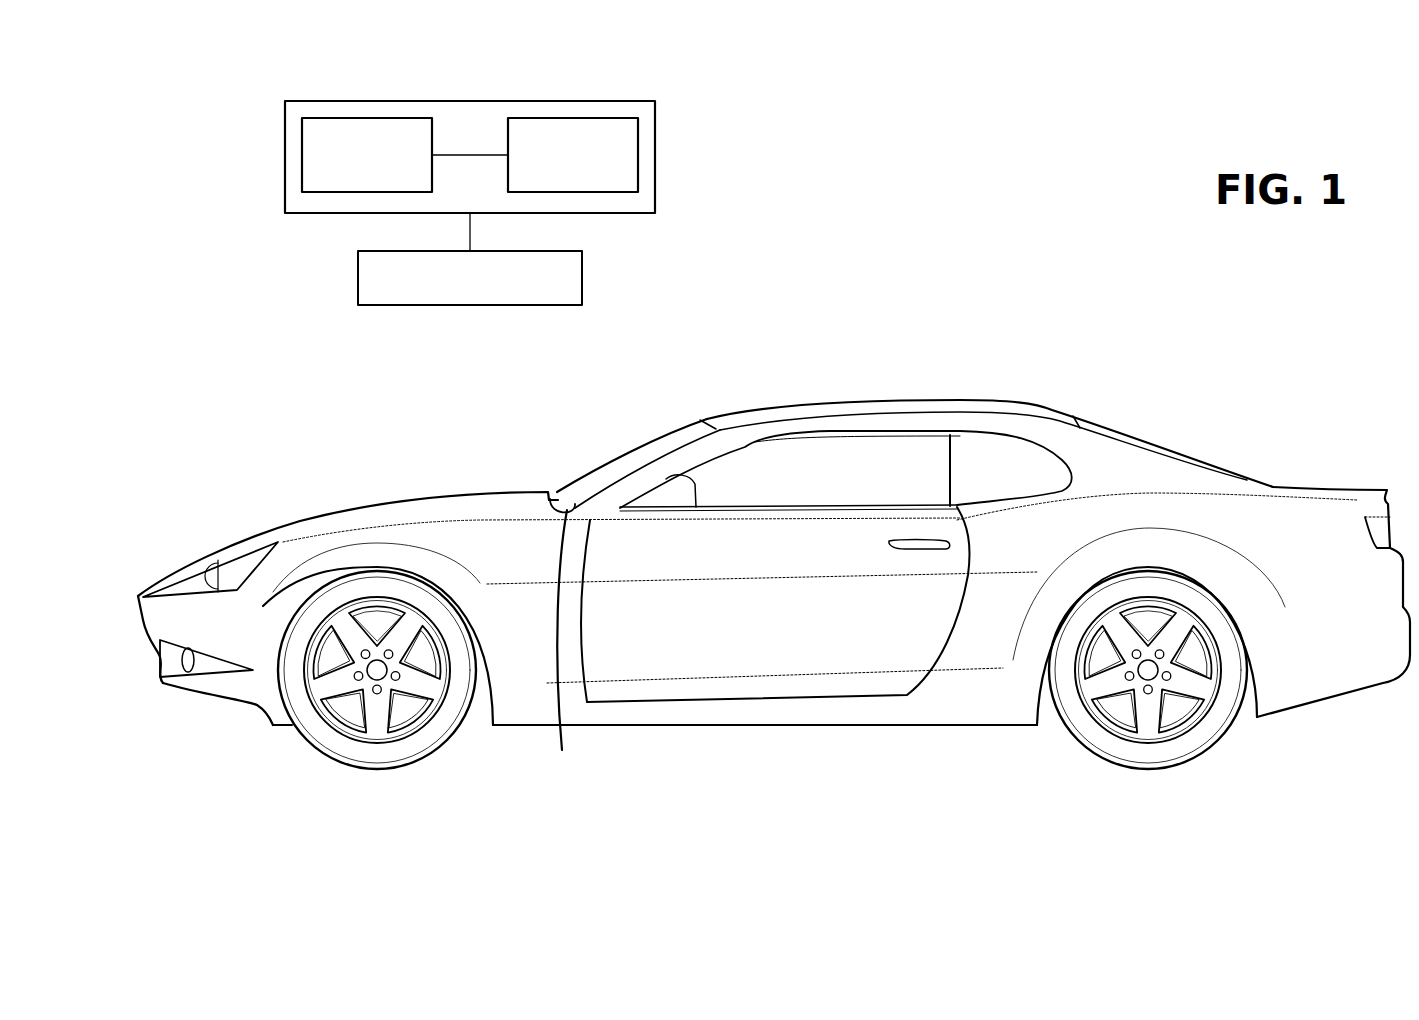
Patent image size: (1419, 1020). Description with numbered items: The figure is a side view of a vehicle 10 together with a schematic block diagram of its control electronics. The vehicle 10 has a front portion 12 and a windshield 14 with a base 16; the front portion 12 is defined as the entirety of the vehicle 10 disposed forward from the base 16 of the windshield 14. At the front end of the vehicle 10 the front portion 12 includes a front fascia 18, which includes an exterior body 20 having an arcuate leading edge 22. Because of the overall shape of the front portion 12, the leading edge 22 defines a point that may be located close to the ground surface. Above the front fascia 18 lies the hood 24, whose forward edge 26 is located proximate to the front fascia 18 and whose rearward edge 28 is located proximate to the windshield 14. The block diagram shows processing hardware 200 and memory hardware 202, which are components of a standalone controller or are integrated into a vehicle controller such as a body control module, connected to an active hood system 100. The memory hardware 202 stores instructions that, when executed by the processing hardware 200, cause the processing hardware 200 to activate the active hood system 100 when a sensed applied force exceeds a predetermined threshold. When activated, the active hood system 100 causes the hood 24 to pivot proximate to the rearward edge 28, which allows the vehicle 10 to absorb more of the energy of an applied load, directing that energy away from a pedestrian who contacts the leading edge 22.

The vehicle 10 is at (1075, 340).
The front portion 12 is at (356, 477).
The windshield 14 is at (617, 470).
The base 16 is at (568, 641).
The front fascia 18 is at (187, 596).
The exterior body 20 is at (158, 618).
The arcuate leading edge 22 is at (137, 598).
The hood 24 is at (338, 520).
The forward edge 26 is at (228, 545).
The rearward edge 28 is at (528, 503).
The active hood system 100 is at (502, 482).
The processing hardware 200 is at (301, 137).
The memory hardware 202 is at (640, 176).